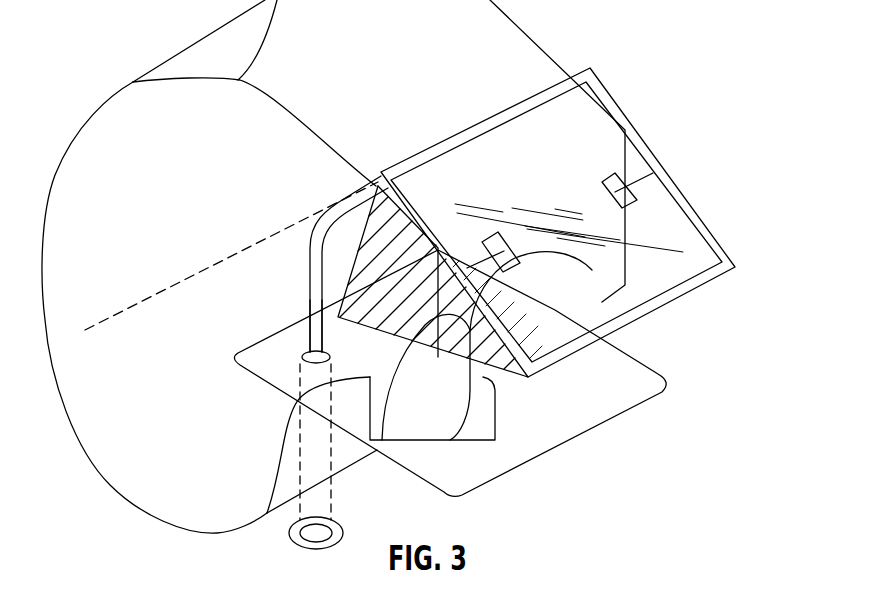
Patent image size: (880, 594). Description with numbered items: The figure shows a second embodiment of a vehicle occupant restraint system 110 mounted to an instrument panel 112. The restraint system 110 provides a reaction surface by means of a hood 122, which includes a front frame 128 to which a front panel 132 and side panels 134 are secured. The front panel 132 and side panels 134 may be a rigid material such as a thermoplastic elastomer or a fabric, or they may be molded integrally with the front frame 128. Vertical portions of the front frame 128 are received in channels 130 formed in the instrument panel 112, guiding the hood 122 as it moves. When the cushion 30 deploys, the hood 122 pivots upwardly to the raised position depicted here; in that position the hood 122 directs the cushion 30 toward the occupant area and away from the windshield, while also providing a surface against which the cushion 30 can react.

The cushion 30 is at (100, 103).
The vehicle occupant restraint system 110 is at (650, 42).
The instrument panel 112 is at (298, 324).
The hood 122 is at (308, 232).
The front frame 128 is at (310, 300).
The channels 130 is at (300, 352).
The front panel 132 is at (688, 258).
The side panels 134 is at (382, 440).